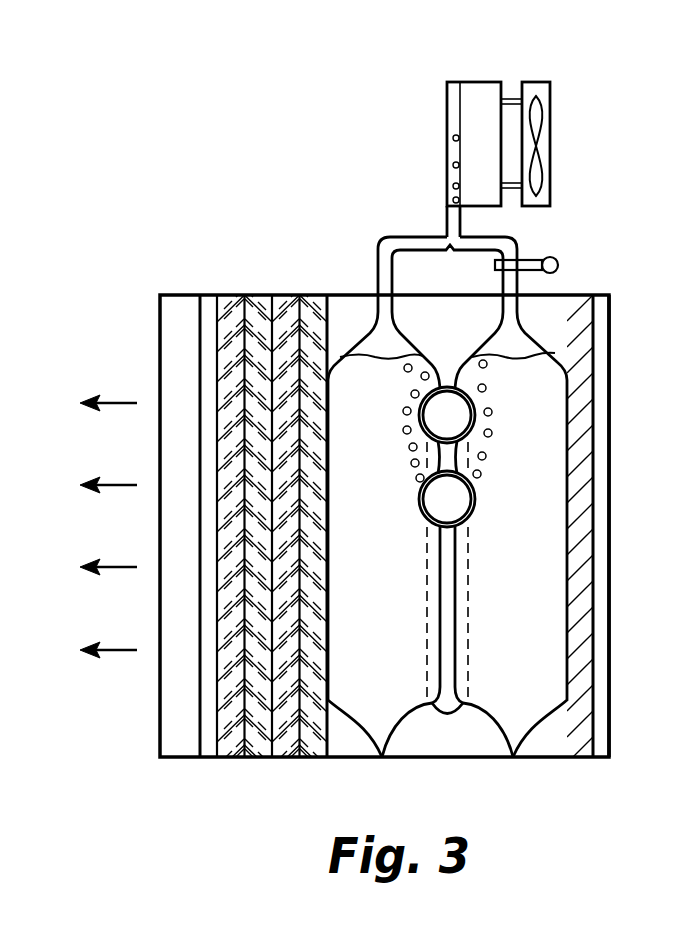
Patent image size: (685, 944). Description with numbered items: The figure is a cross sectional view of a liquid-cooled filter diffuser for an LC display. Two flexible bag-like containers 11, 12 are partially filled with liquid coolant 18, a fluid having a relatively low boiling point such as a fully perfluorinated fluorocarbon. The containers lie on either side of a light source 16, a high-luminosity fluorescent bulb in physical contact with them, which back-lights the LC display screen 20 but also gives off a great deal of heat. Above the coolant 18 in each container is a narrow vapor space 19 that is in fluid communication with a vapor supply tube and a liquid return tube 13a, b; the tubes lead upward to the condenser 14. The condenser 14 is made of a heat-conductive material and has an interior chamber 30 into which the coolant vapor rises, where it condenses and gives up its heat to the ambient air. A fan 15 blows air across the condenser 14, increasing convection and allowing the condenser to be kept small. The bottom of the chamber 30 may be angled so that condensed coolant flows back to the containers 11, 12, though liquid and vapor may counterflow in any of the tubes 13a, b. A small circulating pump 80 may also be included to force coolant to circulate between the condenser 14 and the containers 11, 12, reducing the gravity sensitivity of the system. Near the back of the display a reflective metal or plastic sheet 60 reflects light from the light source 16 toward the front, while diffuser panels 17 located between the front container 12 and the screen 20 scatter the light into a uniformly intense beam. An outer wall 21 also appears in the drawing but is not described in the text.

The flexible bag-like container 11 is at (523, 737).
The flexible bag-like container 12 is at (393, 737).
The vapor supply tube and liquid return tube 13a, b is at (513, 240).
The condenser 14 is at (460, 82).
The fan 15 is at (542, 99).
The light source 16 is at (447, 528).
The diffuser panels 17 is at (288, 300).
The liquid coolant 18 is at (513, 562).
The vapor space 19 is at (520, 333).
The LC display screen 20 is at (170, 338).
The wall 21 is at (609, 413).
The interior chamber 30 is at (452, 123).
The reflective sheet 60 is at (587, 517).
The circulating pump 80 is at (559, 263).